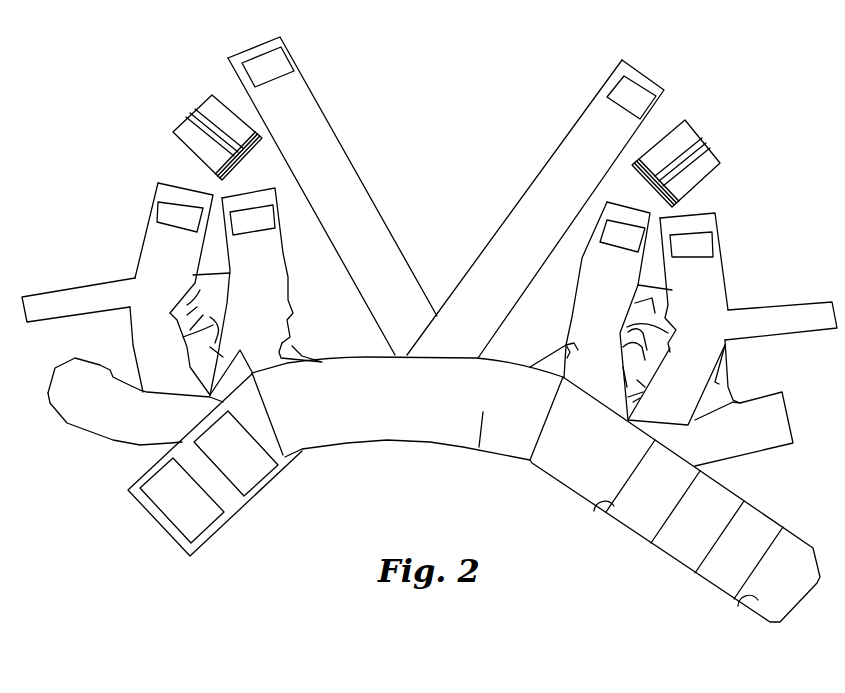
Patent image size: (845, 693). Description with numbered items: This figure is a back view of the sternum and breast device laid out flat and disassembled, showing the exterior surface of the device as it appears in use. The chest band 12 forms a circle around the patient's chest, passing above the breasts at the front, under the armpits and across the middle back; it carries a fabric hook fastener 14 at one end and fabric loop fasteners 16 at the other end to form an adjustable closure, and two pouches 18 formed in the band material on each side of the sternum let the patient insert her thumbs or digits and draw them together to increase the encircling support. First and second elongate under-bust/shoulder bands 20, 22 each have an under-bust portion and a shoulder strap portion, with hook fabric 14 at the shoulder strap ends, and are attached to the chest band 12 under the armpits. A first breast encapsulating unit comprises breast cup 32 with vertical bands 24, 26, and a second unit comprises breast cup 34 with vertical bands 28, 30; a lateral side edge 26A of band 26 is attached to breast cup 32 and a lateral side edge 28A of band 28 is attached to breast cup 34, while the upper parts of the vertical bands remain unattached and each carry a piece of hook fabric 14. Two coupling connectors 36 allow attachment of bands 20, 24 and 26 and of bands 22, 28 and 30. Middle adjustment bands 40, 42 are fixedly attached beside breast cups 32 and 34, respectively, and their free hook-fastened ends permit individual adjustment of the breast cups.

The chest band 12 is at (552, 482).
The fabric hook fastener 14 is at (258, 62).
The fabric loop fasteners 16 is at (250, 478).
The pouches 18 is at (594, 511).
The first under-bust/shoulder band 20 is at (581, 118).
The second under-bust/shoulder band 22 is at (320, 113).
The vertical band 24 is at (722, 283).
The vertical band 26 is at (588, 253).
The lateral side edge 26A is at (572, 324).
The vertical band 28 is at (275, 200).
The lateral side edge 28A is at (288, 330).
The vertical band 30 is at (145, 233).
The breast cup 32 is at (670, 348).
The breast cup 34 is at (187, 331).
The coupling connector 36 is at (190, 120).
The middle adjustment band 40 is at (810, 302).
The middle adjustment band 42 is at (57, 284).